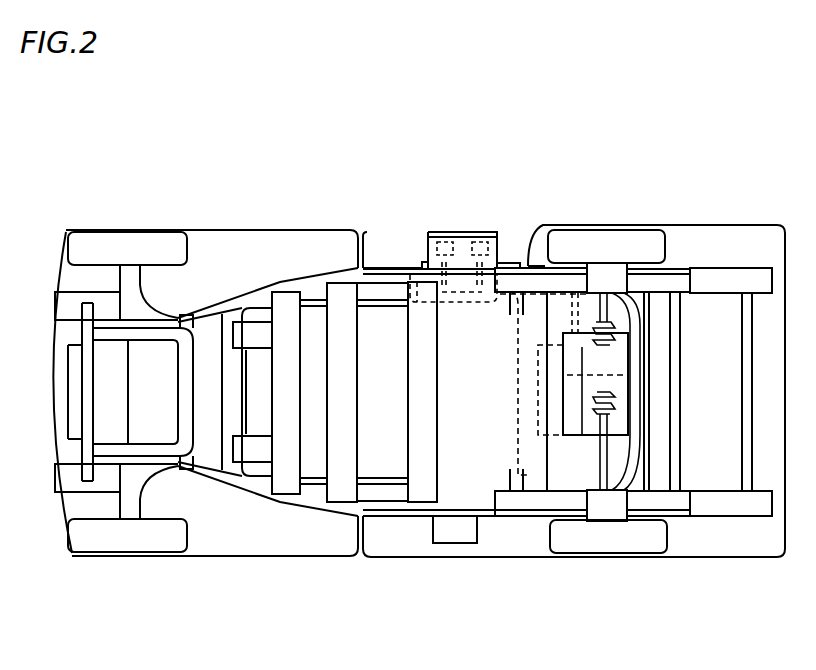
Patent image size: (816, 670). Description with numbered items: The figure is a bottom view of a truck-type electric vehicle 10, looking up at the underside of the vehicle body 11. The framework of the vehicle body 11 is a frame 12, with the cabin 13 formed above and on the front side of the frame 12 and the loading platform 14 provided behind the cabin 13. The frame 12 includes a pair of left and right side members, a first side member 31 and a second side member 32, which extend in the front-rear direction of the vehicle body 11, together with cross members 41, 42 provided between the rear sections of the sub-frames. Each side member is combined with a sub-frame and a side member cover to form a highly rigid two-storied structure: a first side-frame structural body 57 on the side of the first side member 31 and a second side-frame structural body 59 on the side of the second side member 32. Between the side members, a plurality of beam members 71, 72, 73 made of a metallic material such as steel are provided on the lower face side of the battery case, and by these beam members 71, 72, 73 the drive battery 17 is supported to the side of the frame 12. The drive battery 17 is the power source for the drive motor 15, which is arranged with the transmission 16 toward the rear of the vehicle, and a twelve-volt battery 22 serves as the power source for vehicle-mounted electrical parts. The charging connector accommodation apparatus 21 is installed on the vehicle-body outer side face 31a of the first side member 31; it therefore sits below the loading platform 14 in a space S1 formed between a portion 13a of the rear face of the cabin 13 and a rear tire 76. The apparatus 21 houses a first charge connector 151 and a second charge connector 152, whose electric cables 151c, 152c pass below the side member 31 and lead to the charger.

The truck-type electric vehicle 10 is at (667, 142).
The vehicle body 11 is at (230, 565).
The frame 12 is at (742, 266).
The cabin 13 is at (205, 228).
The portion of the rear face of the cabin 13a is at (361, 231).
The loading platform 14 is at (702, 224).
The drive motor 15 is at (567, 427).
The transmission 16 is at (565, 383).
The drive battery 17 is at (347, 494).
The charging connector accommodation apparatus 21 is at (463, 230).
The 12-volt battery 22 is at (467, 544).
The first side member 31 is at (385, 280).
The vehicle-body outer side face of the side member 31a is at (528, 265).
The second side member 32 is at (398, 502).
The cross member 41 is at (677, 350).
The cross member 42 is at (745, 415).
The first side-frame structural body 57 is at (391, 262).
The second side-frame structural body 59 is at (419, 520).
The beam member 71 is at (287, 486).
The beam member 72 is at (367, 458).
The beam member 73 is at (425, 365).
The rear tire 76 is at (640, 245).
The first charge connector 151 is at (490, 236).
The electric cable 151c is at (412, 262).
The second charge connector 152 is at (445, 240).
The electric cable 152c is at (564, 290).
The space S1 is at (508, 242).